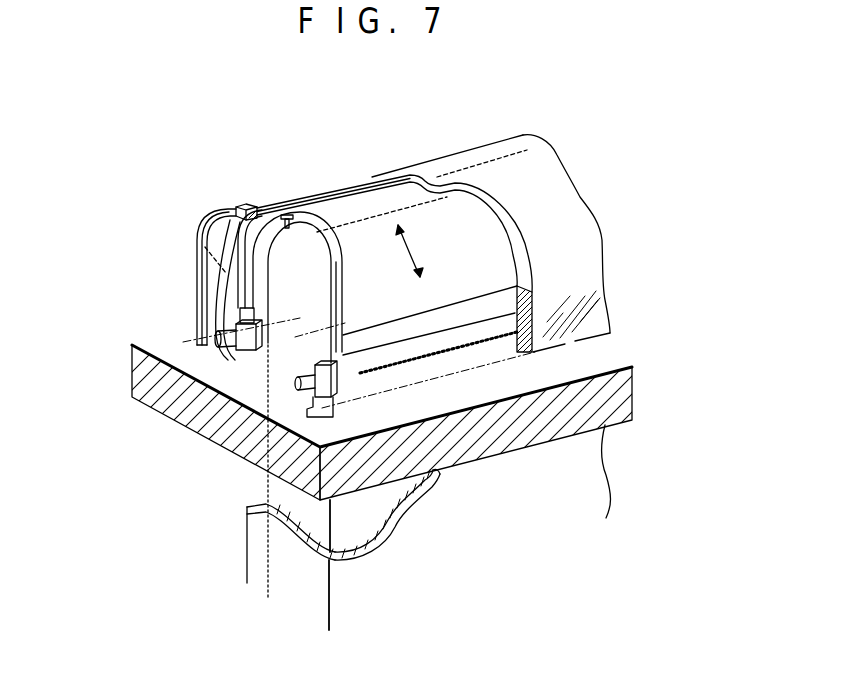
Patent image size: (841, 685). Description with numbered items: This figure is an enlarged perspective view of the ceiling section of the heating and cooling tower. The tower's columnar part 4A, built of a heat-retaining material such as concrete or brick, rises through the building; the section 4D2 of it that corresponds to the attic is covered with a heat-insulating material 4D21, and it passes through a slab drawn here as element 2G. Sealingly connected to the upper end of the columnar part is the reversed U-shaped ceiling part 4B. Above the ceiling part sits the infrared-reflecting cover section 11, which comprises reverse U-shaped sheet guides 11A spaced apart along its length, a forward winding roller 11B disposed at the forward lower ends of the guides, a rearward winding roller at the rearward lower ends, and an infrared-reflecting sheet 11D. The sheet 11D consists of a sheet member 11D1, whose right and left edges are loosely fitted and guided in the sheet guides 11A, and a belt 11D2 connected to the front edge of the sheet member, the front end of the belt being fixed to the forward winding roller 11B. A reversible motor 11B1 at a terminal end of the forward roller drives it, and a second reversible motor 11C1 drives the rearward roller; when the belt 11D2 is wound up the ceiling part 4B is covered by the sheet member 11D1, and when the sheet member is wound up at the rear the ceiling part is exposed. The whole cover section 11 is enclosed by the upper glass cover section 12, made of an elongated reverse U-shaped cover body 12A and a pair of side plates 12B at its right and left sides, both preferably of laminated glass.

The mounting plate 2G is at (619, 418).
The infrared-reflecting cover section 11 is at (487, 248).
The sheet guide 11A is at (248, 246).
The forward winding roller 11B is at (481, 333).
The reversible motor 11B1 is at (300, 380).
The reversible motor 11C1 is at (200, 337).
The infrared-reflecting sheet 11D is at (324, 213).
The sheet member 11D1 is at (370, 227).
The belt 11D2 is at (343, 348).
The upper glass cover section 12 is at (592, 312).
The cover body 12A is at (550, 177).
The side plate 12B is at (232, 222).
The columnar part 4A is at (343, 530).
The ceiling part 4B is at (288, 292).
The section of the aboveground heat absorbing-and-radiating section 4D2 is at (280, 497).
The heat-insulating material 4D21 is at (277, 560).